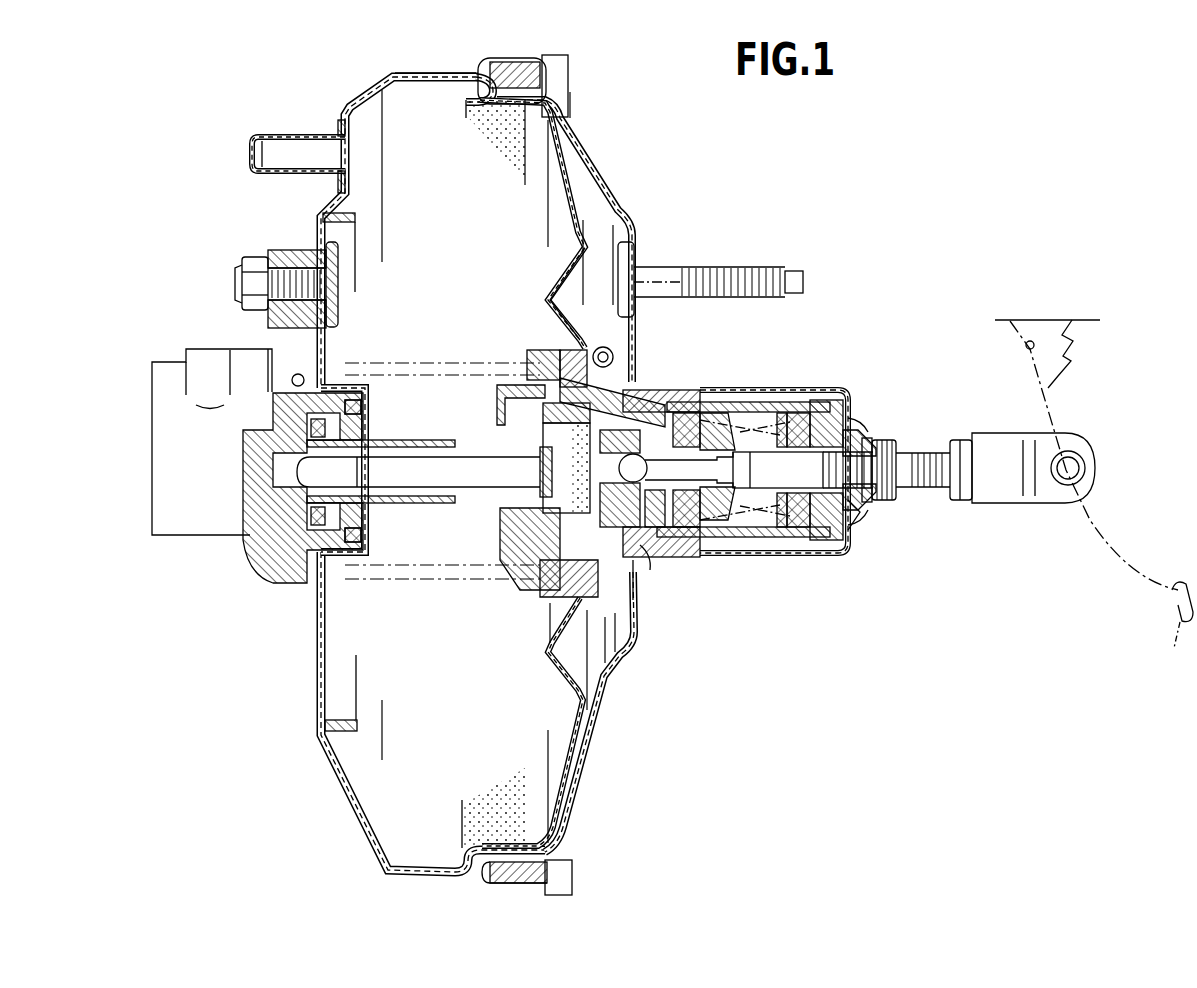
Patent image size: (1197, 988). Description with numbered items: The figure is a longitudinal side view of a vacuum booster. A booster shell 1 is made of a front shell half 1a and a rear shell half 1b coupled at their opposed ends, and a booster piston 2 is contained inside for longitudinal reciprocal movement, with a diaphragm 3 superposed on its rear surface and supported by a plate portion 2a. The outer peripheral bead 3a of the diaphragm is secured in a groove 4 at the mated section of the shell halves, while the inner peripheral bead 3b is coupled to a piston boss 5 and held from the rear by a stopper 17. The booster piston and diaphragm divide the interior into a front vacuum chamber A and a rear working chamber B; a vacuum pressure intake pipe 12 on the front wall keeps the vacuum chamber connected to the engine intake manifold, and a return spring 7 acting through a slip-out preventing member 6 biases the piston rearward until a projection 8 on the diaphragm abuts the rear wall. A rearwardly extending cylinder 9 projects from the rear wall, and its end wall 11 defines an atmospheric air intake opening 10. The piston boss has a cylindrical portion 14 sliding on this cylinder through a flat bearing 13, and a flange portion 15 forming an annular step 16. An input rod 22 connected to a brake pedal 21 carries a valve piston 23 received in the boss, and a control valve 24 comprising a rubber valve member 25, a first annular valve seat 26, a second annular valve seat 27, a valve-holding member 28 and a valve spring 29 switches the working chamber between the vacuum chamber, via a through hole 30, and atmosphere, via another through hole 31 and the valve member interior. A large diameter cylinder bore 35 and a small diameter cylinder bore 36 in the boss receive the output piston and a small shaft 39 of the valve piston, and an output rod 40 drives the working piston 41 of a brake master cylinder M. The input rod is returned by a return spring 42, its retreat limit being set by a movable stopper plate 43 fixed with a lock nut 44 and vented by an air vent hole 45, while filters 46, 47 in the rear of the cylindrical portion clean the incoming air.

The booster shell 1 is at (352, 92).
The front shell half 1a is at (403, 73).
The rear shell half 1b is at (575, 143).
The booster piston 2 is at (560, 276).
The diaphragm support plate 2a is at (574, 401).
The diaphragm 3 is at (573, 184).
The outer peripheral bead 3a is at (500, 62).
The inner peripheral bead 3b is at (603, 346).
The groove 4 is at (532, 60).
The piston boss 5 is at (520, 535).
The slip-out preventing member 6 is at (545, 352).
The return spring 7 is at (535, 575).
The projection 8 is at (583, 740).
The rearwardly extending cylinder 9 is at (810, 388).
The atmospheric air intake opening 10 is at (860, 505).
The end wall 11 is at (856, 430).
The vacuum pressure intake pipe 12 is at (282, 137).
The flat bearing 13 is at (660, 545).
The cylindrical portion 14 is at (736, 402).
The flange portion 15 is at (582, 600).
The annular step 16 is at (631, 615).
The stopper 17 is at (645, 570).
The brake pedal 21 is at (1044, 495).
The input rod 22 is at (788, 482).
The valve piston 23 is at (618, 511).
The control valve 24 is at (706, 413).
The valve member 25 is at (690, 540).
The first annular valve seat 26 is at (680, 412).
The second annular valve seat 27 is at (676, 470).
The valve-holding member 28 is at (743, 525).
The valve spring 29 is at (750, 432).
The through hole 30 is at (648, 390).
The through hole 31 is at (666, 560).
The large diameter cylinder bore 35 is at (540, 470).
The small diameter cylinder bore 36 is at (618, 435).
The small shaft 39 is at (566, 458).
The output rod 40 is at (400, 462).
The working piston 41 is at (256, 532).
The return spring 42 is at (780, 413).
The movable stopper plate 43 is at (874, 438).
The lock nut 44 is at (886, 440).
The air vent hole 45 is at (853, 522).
The filter 46 is at (798, 538).
The filter 47 is at (836, 540).
The front vacuum chamber A is at (456, 230).
The rear working chamber B is at (609, 289).
The brake master cylinder M is at (177, 540).